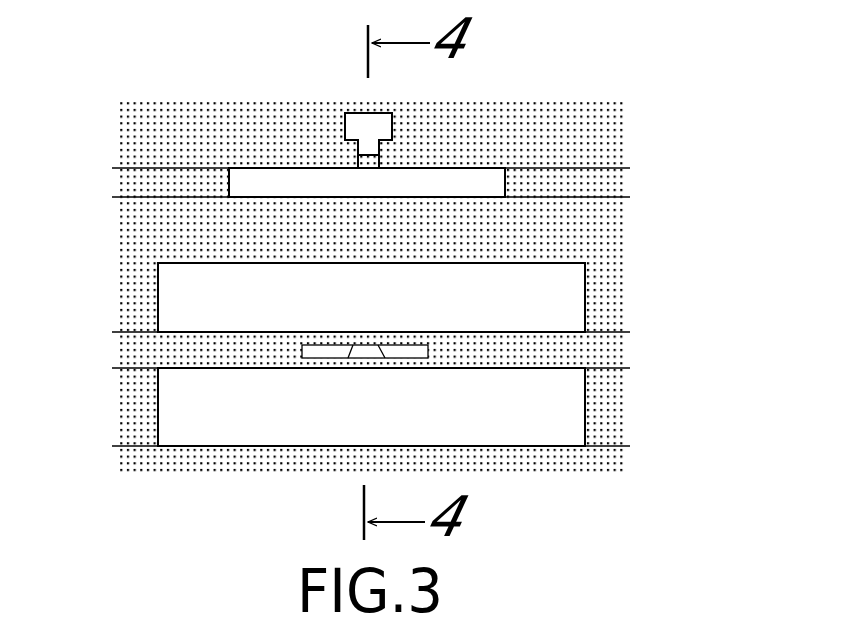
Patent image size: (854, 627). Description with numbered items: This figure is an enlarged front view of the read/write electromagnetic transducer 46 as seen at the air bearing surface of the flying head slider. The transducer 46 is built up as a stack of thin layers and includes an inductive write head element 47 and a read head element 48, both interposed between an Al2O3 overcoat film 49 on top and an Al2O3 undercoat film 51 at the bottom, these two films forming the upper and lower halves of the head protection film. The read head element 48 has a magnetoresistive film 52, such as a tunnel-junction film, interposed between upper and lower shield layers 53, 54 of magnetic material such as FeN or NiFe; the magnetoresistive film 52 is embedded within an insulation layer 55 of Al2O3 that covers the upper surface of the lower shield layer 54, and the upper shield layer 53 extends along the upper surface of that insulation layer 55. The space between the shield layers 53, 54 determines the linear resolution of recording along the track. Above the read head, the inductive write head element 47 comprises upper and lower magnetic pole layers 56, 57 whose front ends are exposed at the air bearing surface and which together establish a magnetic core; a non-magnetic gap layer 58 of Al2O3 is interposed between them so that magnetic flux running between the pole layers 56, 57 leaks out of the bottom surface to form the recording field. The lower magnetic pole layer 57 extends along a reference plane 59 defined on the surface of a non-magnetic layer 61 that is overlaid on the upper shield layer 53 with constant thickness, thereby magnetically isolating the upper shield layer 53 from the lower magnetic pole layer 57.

The read/write electromagnetic transducer 46 is at (592, 79).
The inductive write head element 47 is at (320, 99).
The read head element 48 is at (280, 449).
The overcoat film 49 is at (612, 169).
The undercoat film 51 is at (604, 447).
The magnetoresistive film 52 is at (367, 358).
The upper shield layer 53 is at (158, 305).
The lower shield layer 54 is at (158, 428).
The insulation layer 55 is at (604, 333).
The upper magnetic pole layer 56 is at (355, 148).
The lower magnetic pole layer 57 is at (228, 170).
The non-magnetic gap layer 58 is at (384, 164).
The reference plane 59 is at (608, 200).
The non-magnetic layer 61 is at (140, 198).